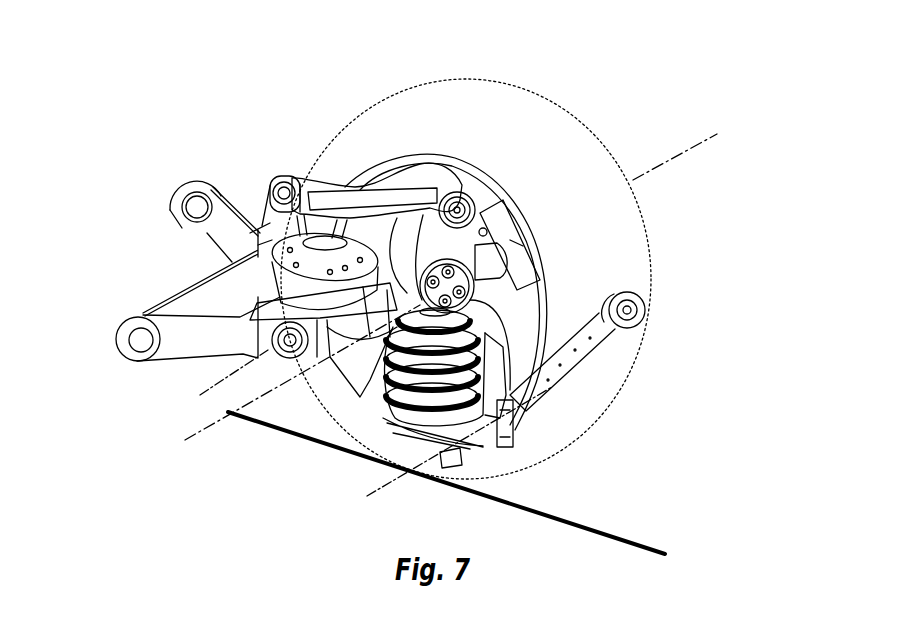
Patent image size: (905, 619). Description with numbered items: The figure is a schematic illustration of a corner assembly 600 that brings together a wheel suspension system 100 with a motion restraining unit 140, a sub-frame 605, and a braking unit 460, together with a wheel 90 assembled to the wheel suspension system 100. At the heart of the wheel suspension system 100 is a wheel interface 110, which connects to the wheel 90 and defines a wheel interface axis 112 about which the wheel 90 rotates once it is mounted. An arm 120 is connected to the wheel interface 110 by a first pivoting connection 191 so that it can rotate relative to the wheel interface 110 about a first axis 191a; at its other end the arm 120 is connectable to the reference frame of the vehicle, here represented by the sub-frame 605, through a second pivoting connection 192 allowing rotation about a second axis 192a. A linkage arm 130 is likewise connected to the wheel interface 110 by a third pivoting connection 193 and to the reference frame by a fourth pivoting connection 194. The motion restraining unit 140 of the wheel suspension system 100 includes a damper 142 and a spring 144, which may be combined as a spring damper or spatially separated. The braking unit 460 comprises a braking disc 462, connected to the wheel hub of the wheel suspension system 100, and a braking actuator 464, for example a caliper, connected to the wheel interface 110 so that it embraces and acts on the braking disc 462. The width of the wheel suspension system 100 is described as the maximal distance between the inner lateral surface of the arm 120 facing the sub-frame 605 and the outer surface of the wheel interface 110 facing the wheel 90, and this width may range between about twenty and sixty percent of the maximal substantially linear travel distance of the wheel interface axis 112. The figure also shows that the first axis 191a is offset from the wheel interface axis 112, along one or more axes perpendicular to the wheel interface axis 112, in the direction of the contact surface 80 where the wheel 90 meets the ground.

The corner assembly 600 is at (105, 34).
The contact surface 80 is at (613, 535).
The wheel 90 is at (607, 153).
The wheel suspension system 100 is at (410, 150).
The wheel interface 110 is at (458, 243).
The wheel interface axis 112 is at (207, 428).
The arm 120 is at (343, 357).
The linkage arm 130 is at (373, 205).
The motion restraining unit 140 is at (357, 540).
The damper 142 is at (444, 428).
The spring 144 is at (420, 375).
The first pivoting connection 191 is at (490, 432).
The first axis 191a is at (450, 462).
The second pivoting connection 192 is at (272, 348).
The second axis 192a is at (202, 391).
The third pivoting connection 193 is at (459, 196).
The fourth pivoting connection 194 is at (281, 183).
The braking unit 460 is at (706, 182).
The braking disc 462 is at (548, 306).
The braking actuator 464 is at (507, 252).
The sub-frame 605 is at (213, 297).